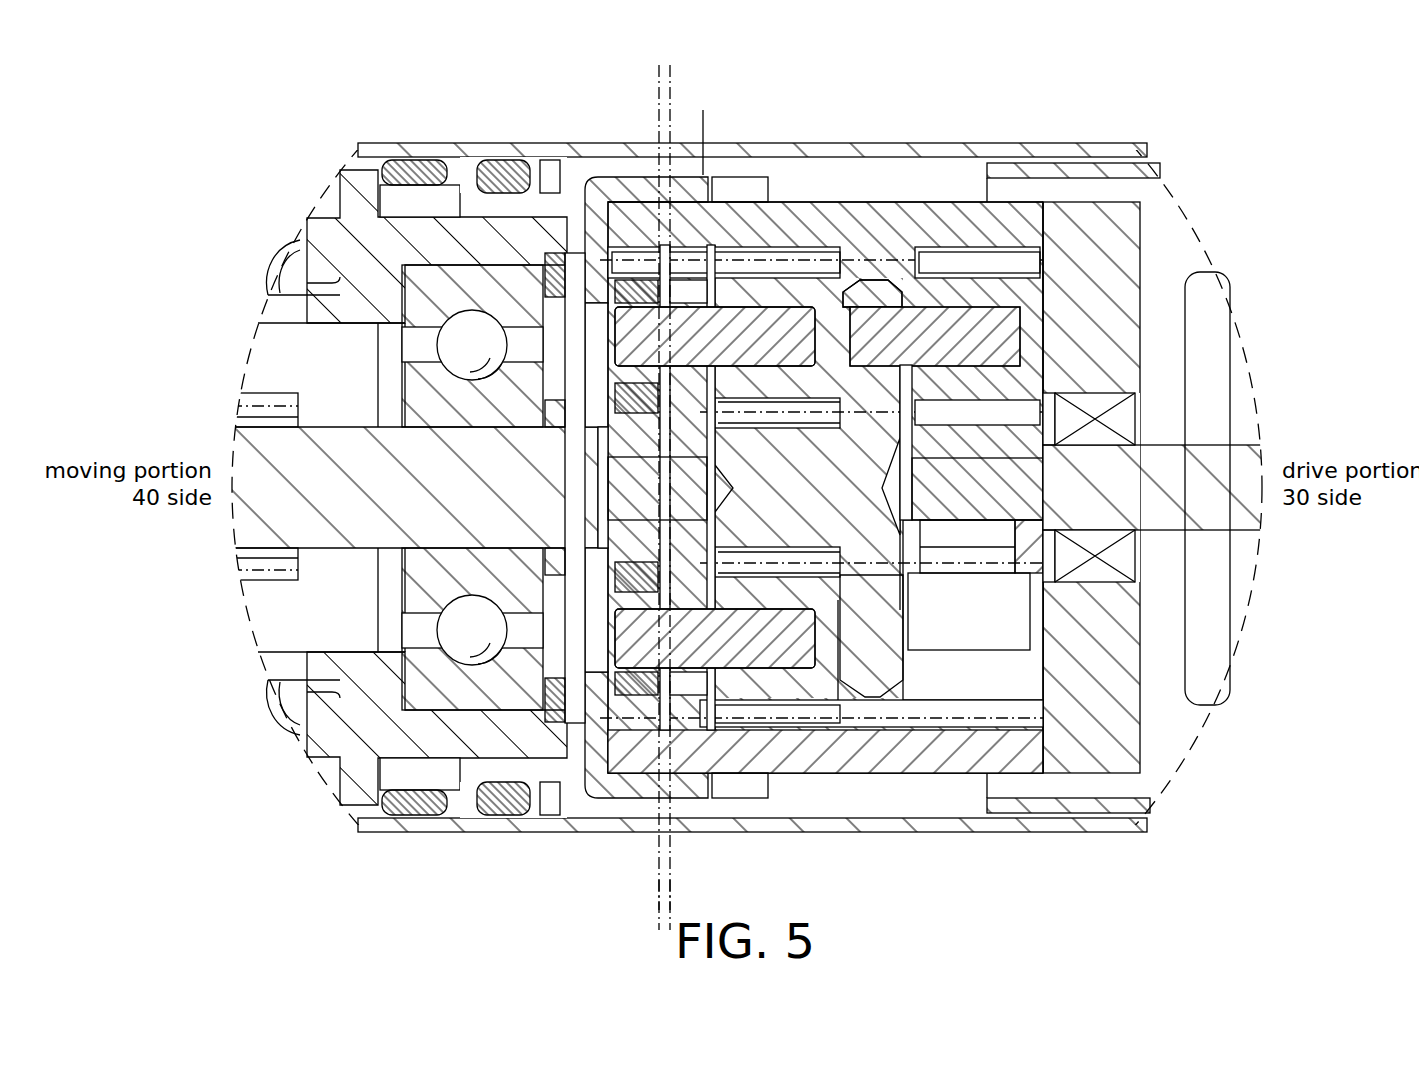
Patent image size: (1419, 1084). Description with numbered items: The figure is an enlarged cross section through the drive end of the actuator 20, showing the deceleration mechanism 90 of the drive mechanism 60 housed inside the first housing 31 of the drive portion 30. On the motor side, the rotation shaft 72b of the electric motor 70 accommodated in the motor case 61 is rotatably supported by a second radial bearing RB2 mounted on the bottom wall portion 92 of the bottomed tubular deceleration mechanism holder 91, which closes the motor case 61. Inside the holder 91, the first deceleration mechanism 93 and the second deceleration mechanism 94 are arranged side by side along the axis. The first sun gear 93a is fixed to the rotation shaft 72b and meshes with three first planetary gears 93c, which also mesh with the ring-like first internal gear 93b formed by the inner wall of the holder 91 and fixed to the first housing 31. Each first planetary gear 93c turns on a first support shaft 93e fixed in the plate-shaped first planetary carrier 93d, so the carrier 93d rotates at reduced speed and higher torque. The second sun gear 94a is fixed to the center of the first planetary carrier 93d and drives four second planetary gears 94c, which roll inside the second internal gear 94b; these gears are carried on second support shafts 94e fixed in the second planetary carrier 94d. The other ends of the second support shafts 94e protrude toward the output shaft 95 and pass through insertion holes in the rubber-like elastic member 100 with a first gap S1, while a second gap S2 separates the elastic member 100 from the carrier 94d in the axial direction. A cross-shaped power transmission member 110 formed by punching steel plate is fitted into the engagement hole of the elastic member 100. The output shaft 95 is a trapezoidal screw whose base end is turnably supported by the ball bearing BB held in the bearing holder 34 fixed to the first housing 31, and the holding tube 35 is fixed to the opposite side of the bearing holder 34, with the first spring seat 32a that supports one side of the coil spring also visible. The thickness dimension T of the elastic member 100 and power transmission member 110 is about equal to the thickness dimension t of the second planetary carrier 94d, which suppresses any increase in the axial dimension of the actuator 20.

The actuator 20 is at (756, 501).
The drive portion 30 is at (1094, 142).
The first housing 31 is at (1020, 832).
The first spring seat 32a is at (320, 245).
The bearing holder 34 is at (457, 735).
The holding tube 35 is at (297, 312).
The drive mechanism 60 is at (1254, 366).
The motor case 61 is at (1128, 793).
The electric motor 70 is at (1224, 675).
The rotation shaft 72b is at (1110, 504).
The deceleration mechanism 90 is at (1147, 258).
The deceleration mechanism holder 91 is at (880, 228).
The bottom wall portion 92 is at (1092, 670).
The first deceleration mechanism 93 is at (1014, 246).
The first sun gear 93a is at (972, 530).
The first internal gear 93b is at (1012, 640).
The first planetary gear 93c is at (947, 295).
The first planetary carrier 93d is at (880, 625).
The first support shaft 93e is at (907, 352).
The second deceleration mechanism 94 is at (824, 246).
The second sun gear 94a is at (757, 504).
The second internal gear 94b is at (745, 690).
The second planetary gear 94c is at (768, 297).
The second planetary carrier 94d is at (555, 283).
The second support shaft 94e is at (690, 352).
The output shaft 95 is at (468, 504).
The elastic member 100 is at (577, 695).
The power transmission member 110 is at (688, 497).
The ball bearing BB is at (470, 343).
The second radial bearing RB2 is at (1120, 557).
The first gap S1 is at (638, 290).
The second gap S2 is at (720, 85).
The thickness dimension of the second planetary carrier t is at (758, 125).
The thickness dimension of the elastic member and power transmission member T is at (730, 895).